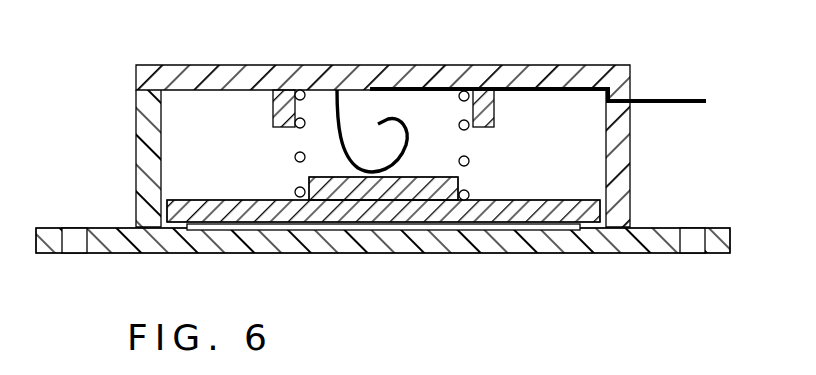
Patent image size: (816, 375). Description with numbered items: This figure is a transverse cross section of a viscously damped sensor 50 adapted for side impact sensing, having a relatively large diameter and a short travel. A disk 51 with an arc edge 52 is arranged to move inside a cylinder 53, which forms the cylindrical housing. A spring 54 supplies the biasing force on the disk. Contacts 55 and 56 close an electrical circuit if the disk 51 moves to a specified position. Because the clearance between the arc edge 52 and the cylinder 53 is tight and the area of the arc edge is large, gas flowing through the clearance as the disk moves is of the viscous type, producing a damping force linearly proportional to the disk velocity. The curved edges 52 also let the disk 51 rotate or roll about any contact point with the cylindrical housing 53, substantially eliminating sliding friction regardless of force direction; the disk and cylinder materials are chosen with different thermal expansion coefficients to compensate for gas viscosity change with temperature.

The viscously damped sensor 50 is at (137, 97).
The disk 51 is at (267, 216).
The arc edge 52 is at (142, 197).
The cylinder 53 is at (162, 147).
The spring 54 is at (294, 159).
The contact 55 is at (380, 118).
The contact 56 is at (397, 95).